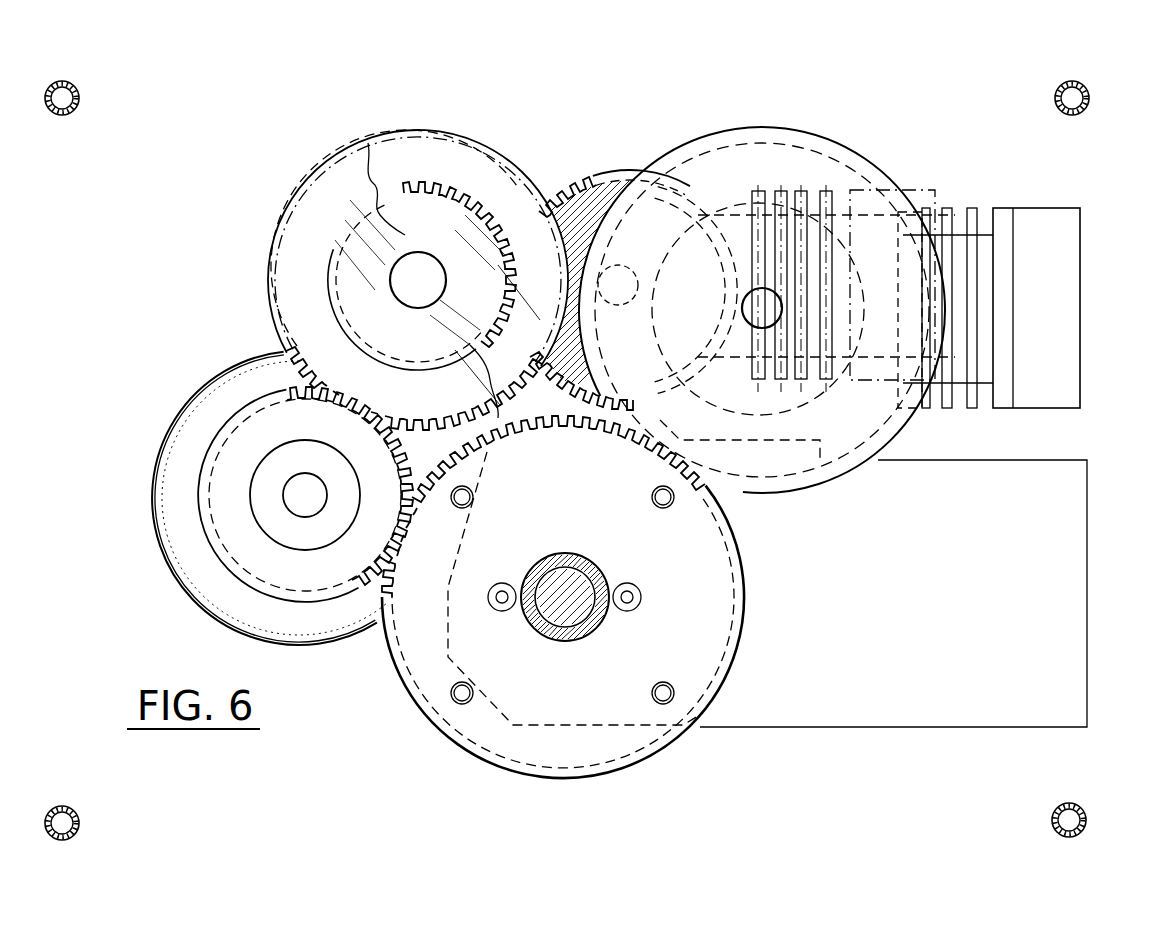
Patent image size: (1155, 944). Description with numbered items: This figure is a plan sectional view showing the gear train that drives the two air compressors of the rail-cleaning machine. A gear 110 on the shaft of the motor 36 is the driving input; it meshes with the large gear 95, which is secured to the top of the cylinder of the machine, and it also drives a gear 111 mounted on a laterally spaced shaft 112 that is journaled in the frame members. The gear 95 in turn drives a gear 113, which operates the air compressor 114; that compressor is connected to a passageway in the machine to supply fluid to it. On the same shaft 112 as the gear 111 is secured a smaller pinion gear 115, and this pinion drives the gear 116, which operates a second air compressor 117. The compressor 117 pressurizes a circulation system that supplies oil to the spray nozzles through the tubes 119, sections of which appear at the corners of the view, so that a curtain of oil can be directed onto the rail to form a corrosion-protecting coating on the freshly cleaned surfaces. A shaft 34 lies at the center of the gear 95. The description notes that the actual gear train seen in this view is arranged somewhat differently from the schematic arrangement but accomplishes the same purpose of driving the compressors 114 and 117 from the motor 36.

The shaft 34 is at (578, 608).
The motor 36 is at (210, 397).
The gear 95 is at (420, 657).
The gear 110 is at (258, 428).
The gear 111 is at (288, 255).
The shaft 112 is at (407, 272).
The gear 113 is at (782, 450).
The air compressor 114 is at (1060, 310).
The pinion gear 115 is at (417, 210).
The gear 116 is at (575, 178).
The air compressor 117 is at (920, 202).
The tubes 119 is at (78, 88).